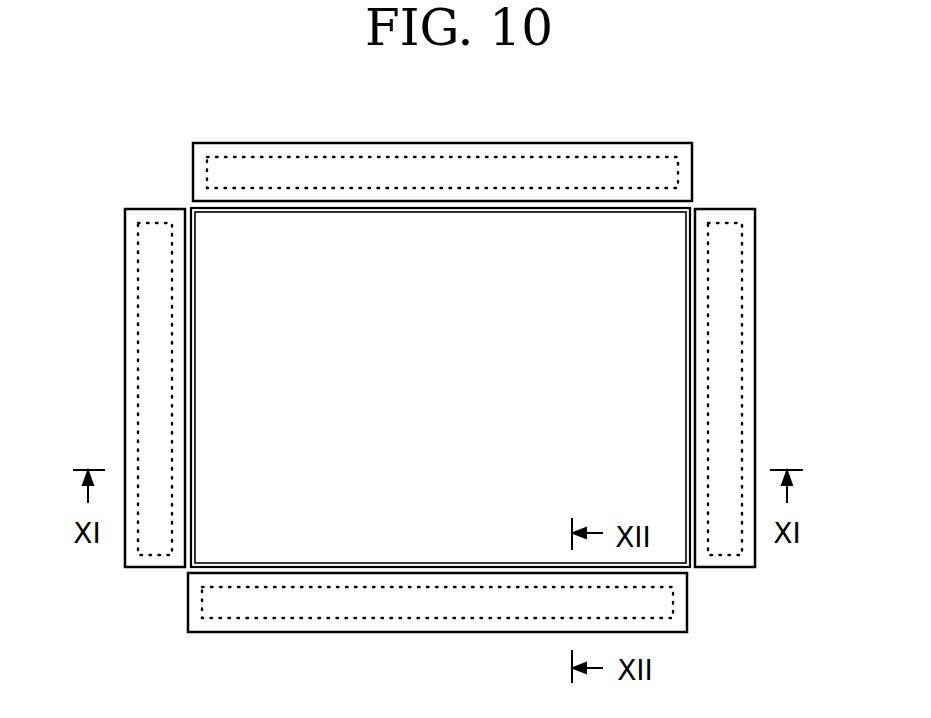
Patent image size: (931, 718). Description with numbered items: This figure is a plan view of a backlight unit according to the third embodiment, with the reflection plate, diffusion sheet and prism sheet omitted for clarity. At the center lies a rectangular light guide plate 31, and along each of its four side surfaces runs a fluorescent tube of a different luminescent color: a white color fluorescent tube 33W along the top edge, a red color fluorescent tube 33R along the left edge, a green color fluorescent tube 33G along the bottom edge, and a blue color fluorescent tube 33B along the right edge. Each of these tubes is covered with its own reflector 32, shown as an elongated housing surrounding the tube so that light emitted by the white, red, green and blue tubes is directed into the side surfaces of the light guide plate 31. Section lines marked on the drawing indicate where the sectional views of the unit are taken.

The light guide plate 31 is at (623, 225).
The reflector 32 is at (560, 143).
The white color fluorescent tube 33W is at (400, 150).
The red color fluorescent tube 33R is at (140, 378).
The green color fluorescent tube 33G is at (398, 613).
The blue color fluorescent tube 33B is at (747, 392).